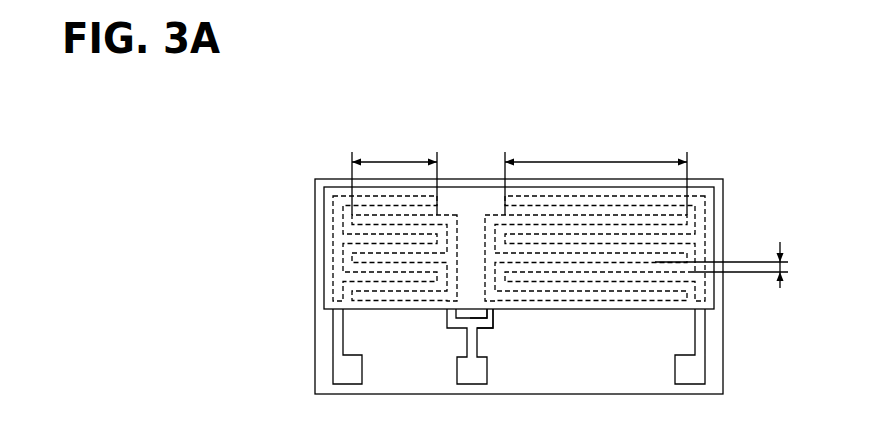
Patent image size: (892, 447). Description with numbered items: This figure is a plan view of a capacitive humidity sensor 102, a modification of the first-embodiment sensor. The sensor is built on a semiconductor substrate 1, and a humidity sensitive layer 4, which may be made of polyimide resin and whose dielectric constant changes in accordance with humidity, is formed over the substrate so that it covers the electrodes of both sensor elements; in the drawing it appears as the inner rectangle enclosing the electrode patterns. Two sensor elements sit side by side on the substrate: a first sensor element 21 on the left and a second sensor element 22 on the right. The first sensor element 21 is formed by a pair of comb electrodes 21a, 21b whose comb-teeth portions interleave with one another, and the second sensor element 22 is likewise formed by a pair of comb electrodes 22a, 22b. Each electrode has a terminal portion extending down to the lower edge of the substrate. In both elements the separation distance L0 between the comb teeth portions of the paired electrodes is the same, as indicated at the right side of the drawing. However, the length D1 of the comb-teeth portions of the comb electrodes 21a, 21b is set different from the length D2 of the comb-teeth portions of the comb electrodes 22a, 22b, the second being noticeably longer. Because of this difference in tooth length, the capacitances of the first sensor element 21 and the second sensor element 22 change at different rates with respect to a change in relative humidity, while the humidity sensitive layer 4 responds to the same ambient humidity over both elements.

The capacitive humidity sensor 102 is at (299, 125).
The semiconductor substrate 1 is at (625, 365).
The humidity sensitive layer 4 is at (715, 195).
The first sensor element 21 is at (457, 113).
The second sensor element 22 is at (485, 113).
The comb electrode 21a is at (334, 305).
The comb electrode 21b is at (447, 308).
The comb electrode 22a is at (486, 305).
The comb electrode 22b is at (706, 303).
The length of comb-teeth portions D1 is at (394, 171).
The length of comb-teeth portions D2 is at (596, 171).
The separation distance L0 is at (737, 265).